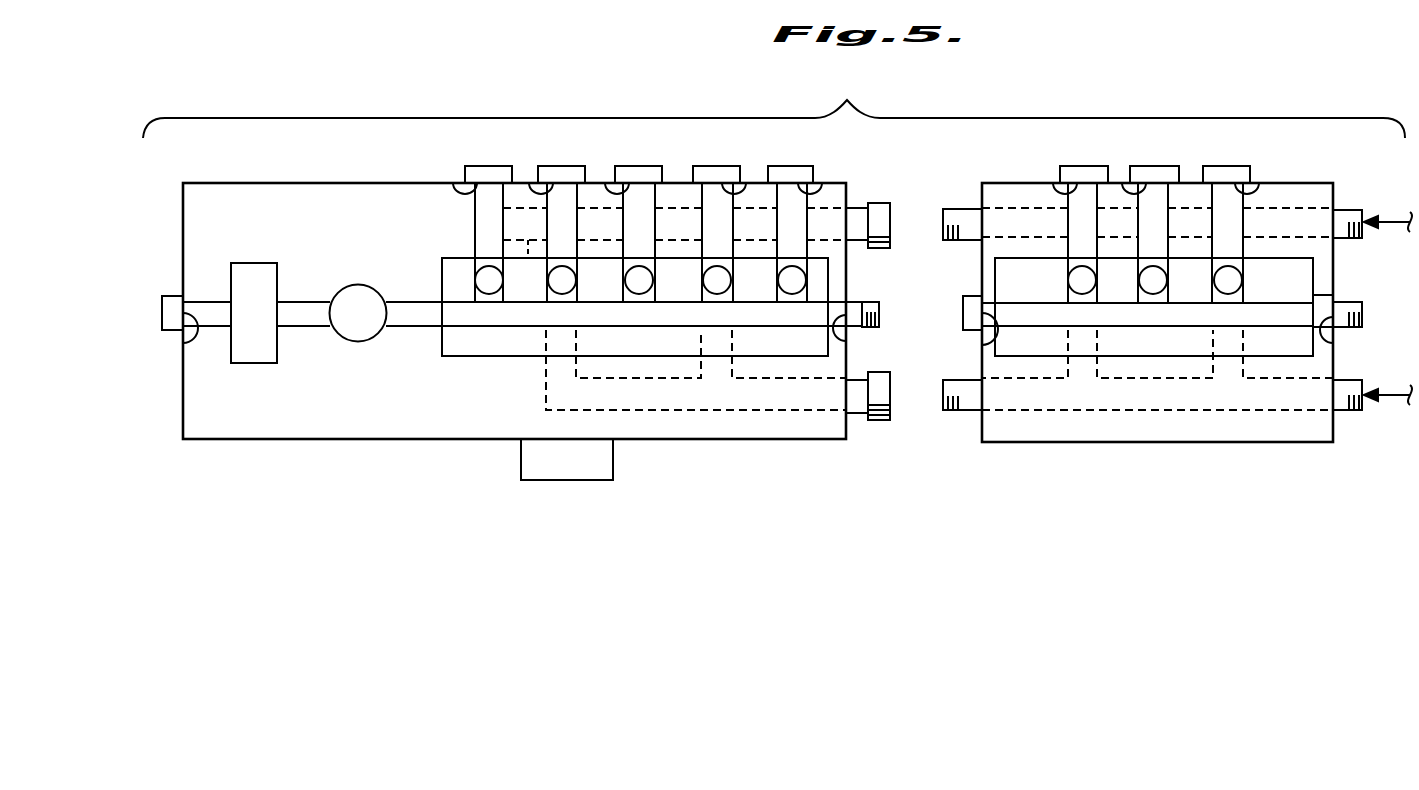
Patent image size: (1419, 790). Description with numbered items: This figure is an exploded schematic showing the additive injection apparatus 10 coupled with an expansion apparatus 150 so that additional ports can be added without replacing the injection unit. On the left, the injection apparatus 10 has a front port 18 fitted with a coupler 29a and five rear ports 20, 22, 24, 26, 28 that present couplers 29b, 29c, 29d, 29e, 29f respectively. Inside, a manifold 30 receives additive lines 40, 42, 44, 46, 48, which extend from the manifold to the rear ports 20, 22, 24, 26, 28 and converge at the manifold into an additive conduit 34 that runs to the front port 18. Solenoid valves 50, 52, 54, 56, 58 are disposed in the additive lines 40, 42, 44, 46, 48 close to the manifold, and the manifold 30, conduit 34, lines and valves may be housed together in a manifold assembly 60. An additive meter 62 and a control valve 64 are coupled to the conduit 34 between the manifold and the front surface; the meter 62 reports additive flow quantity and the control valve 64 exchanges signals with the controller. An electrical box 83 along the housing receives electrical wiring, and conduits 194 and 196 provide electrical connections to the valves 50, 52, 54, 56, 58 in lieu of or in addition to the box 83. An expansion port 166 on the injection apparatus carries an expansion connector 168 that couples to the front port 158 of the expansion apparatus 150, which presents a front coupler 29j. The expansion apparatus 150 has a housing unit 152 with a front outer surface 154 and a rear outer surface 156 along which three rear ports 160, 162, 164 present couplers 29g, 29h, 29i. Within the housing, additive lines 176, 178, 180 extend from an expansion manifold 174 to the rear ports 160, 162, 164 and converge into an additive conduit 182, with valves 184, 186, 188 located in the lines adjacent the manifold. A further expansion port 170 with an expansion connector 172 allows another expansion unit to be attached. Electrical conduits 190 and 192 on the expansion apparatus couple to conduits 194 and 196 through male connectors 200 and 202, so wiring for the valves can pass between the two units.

The additive injection apparatus 10 is at (275, 438).
The front port 18 is at (178, 344).
The rear port 20 is at (455, 184).
The rear port 22 is at (533, 186).
The rear port 24 is at (609, 188).
The rear port 26 is at (746, 187).
The rear port 28 is at (820, 186).
The coupler 29a is at (162, 312).
The coupler 29b is at (467, 166).
The coupler 29c is at (560, 166).
The coupler 29d is at (634, 166).
The coupler 29e is at (714, 166).
The coupler 29f is at (798, 166).
The coupler 29g is at (1067, 166).
The coupler 29h is at (1136, 166).
The coupler 29i is at (1244, 166).
The front coupler 29j is at (963, 315).
The manifold 30 is at (641, 326).
The additive conduit 34 is at (330, 327).
The additive line 40 is at (472, 205).
The additive line 42 is at (545, 227).
The additive line 44 is at (658, 248).
The additive line 46 is at (735, 248).
The additive line 48 is at (806, 249).
The solenoid valve 50 is at (485, 267).
The solenoid valve 52 is at (577, 270).
The solenoid valve 54 is at (655, 270).
The solenoid valve 56 is at (733, 270).
The solenoid valve 58 is at (806, 270).
The manifold assembly 60 is at (477, 358).
The additive meter 62 is at (356, 285).
The control valve 64 is at (274, 265).
The electrical box 83 is at (520, 479).
The expansion apparatus 150 is at (1093, 442).
The housing unit 152 is at (1200, 443).
The front outer surface 154 is at (982, 442).
The rear outer surface 156 is at (1320, 183).
The front port 158 is at (990, 347).
The rear port 160 is at (1058, 184).
The rear port 162 is at (1124, 184).
The rear port 164 is at (1256, 186).
The expansion port 166 is at (848, 340).
The expansion connector 168 is at (866, 303).
The expansion port 170 is at (1336, 339).
The expansion connector 172 is at (1360, 303).
The expansion manifold 174 is at (1161, 328).
The additive line 176 is at (1062, 225).
The additive line 178 is at (1138, 243).
The additive line 180 is at (1245, 229).
The additive conduit 182 is at (1050, 300).
The valve 184 is at (1078, 269).
The valve 186 is at (1163, 269).
The valve 188 is at (1240, 269).
The conduit 190 is at (968, 208).
The conduit 192 is at (962, 411).
The conduit 194 is at (865, 189).
The conduit 196 is at (545, 389).
The male connector 200 is at (892, 245).
The male connector 202 is at (887, 421).